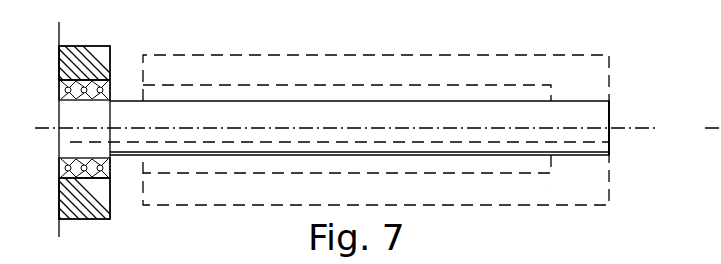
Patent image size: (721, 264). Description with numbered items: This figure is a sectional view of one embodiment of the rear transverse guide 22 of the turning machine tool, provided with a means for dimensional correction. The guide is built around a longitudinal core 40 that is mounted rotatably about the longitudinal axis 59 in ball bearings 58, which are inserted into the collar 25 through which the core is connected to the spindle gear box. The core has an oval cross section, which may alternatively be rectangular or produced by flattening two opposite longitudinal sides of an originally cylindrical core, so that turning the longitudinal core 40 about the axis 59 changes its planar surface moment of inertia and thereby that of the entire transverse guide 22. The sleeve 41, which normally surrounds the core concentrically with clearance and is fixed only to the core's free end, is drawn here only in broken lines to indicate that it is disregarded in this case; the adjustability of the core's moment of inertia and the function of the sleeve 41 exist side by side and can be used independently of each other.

The rear transverse guide 22 is at (506, 205).
The collar 25 is at (88, 56).
The longitudinal core 40 is at (222, 115).
The sleeve 41 is at (313, 53).
The ball bearings 58 is at (67, 167).
The longitudinal axis 59 is at (614, 127).